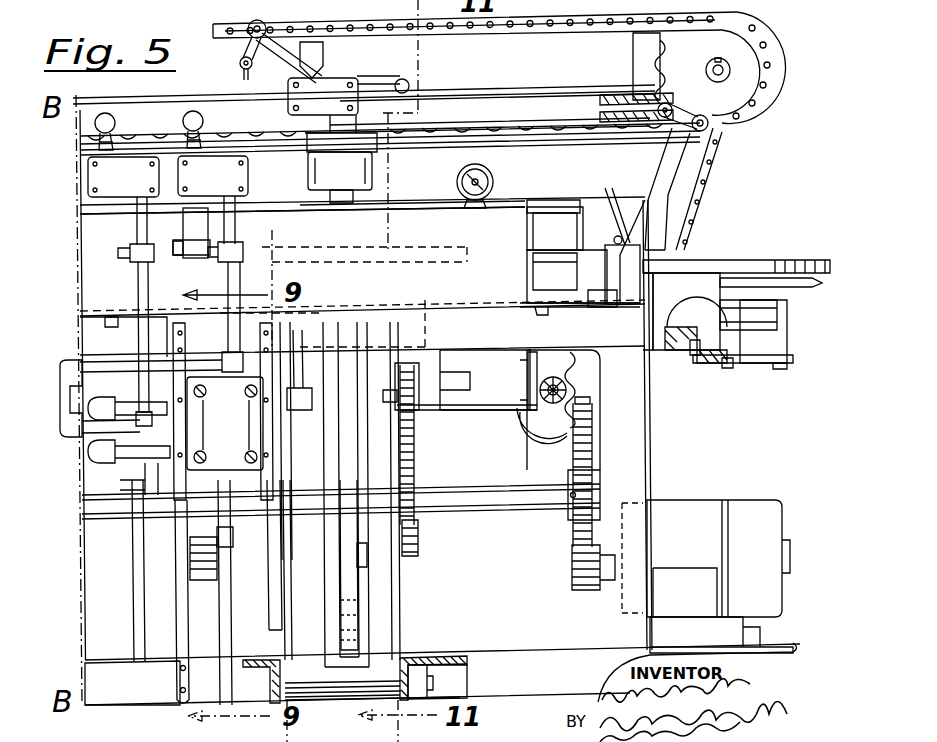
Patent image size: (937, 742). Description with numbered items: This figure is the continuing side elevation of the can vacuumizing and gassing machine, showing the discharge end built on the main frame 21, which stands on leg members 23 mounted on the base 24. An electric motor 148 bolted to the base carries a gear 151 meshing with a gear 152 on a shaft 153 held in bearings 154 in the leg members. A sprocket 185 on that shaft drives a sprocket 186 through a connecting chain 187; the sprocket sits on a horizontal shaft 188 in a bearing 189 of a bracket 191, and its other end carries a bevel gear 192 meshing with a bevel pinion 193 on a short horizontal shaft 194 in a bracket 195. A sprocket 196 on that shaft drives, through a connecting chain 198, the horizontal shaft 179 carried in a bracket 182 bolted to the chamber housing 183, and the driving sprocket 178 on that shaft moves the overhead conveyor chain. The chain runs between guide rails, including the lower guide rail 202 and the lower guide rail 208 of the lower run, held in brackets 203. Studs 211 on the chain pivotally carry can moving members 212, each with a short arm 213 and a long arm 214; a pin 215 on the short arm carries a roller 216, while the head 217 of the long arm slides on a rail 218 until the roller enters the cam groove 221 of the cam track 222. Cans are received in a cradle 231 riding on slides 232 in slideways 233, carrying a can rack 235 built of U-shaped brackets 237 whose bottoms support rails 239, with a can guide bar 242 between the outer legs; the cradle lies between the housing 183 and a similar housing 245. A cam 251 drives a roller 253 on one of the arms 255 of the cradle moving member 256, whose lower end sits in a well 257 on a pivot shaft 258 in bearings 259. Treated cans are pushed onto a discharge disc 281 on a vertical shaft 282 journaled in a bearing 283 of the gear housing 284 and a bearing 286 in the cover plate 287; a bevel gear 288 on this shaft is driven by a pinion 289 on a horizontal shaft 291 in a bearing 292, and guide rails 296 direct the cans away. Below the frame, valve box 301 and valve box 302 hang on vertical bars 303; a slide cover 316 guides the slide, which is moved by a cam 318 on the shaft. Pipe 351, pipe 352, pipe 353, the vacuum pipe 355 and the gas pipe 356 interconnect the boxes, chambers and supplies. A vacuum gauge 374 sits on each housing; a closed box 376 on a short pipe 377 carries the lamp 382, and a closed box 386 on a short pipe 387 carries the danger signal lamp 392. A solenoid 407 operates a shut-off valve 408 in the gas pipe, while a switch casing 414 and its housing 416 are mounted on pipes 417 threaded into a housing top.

The main frame 21 is at (447, 316).
The leg members 23 is at (642, 445).
The base 24 is at (132, 683).
The electric motor 148 is at (710, 500).
The gear 151 is at (583, 595).
The gear 152 is at (573, 452).
The shaft 153 is at (104, 547).
The bearings 154 is at (606, 480).
The driving sprocket 178 is at (760, 108).
The horizontal shaft 179 is at (730, 71).
The bracket 182 is at (642, 231).
The chamber housing 183 is at (608, 188).
The sprocket 185 is at (418, 551).
The sprocket 186 is at (430, 411).
The connecting chain 187 is at (414, 445).
The horizontal shaft 188 is at (389, 403).
The bearing 189 is at (503, 425).
The bracket 191 is at (485, 379).
The bevel gear 192 is at (527, 362).
The bevel pinion 193 is at (590, 400).
The short horizontal shaft 194 is at (567, 384).
The bracket 195 is at (556, 360).
The sprocket 196 is at (585, 364).
The connecting chain 198 is at (712, 188).
The lower guide rail 202 is at (542, 31).
The brackets 203 is at (640, 52).
The lower guide rail 208 is at (302, 184).
The studs 211 is at (706, 118).
The can moving member 212 is at (255, 20).
The short arm 213 is at (684, 92).
The long arm 214 is at (730, 171).
The pin 215 is at (255, 81).
The roller 216 is at (240, 65).
The head 217 is at (408, 76).
The rail 218 is at (495, 82).
The cam groove 221 is at (614, 94).
The cam track 222 is at (477, 118).
The cradle 231 is at (552, 200).
The slides 232 is at (543, 320).
The slideways 233 is at (537, 312).
The can rack 235 is at (580, 272).
The U-shaped brackets 237 is at (622, 274).
The rails 239 is at (596, 305).
The can guide bar 242 is at (556, 258).
The housing 245 is at (432, 214).
The cam 251 is at (358, 601).
The roller 253 is at (367, 558).
The arms 255 is at (386, 638).
The cradle moving member 256 is at (345, 670).
The well 257 is at (320, 708).
The pivot shaft 258 is at (433, 680).
The bearings 259 is at (428, 661).
The discharge disc 281 is at (813, 290).
The vertical shaft 282 is at (748, 340).
The bearing 283 is at (735, 315).
The gear housing 284 is at (686, 311).
The bearing 286 is at (728, 370).
The cover plate 287 is at (788, 366).
The bevel gear 288 is at (748, 365).
The pinion 289 is at (708, 364).
The horizontal shaft 291 is at (672, 350).
The bearing 292 is at (684, 358).
The guide rails 296 is at (801, 252).
The valve box 301 is at (284, 436).
The valve box 302 is at (135, 474).
The vertical bars 303 is at (268, 585).
The slide cover 316 is at (222, 452).
The cam 318 is at (196, 568).
The pipe 351 is at (103, 382).
The pipe 352 is at (311, 325).
The pipe 353 is at (88, 452).
The pipe 355 is at (140, 270).
The pipe 356 is at (66, 402).
The vacuum gauge 374 is at (493, 173).
The closed box 376 is at (123, 177).
The short pipe 377 is at (137, 229).
The lamp 382 is at (115, 123).
The closed box 386 is at (213, 176).
The short pipe 387 is at (236, 229).
The danger signal lamp 392 is at (203, 121).
The solenoid 407 is at (195, 233).
The shut-off valve 408 is at (195, 256).
The switch casing 414 is at (332, 115).
The housing 416 is at (340, 171).
The pipes 417 is at (343, 207).